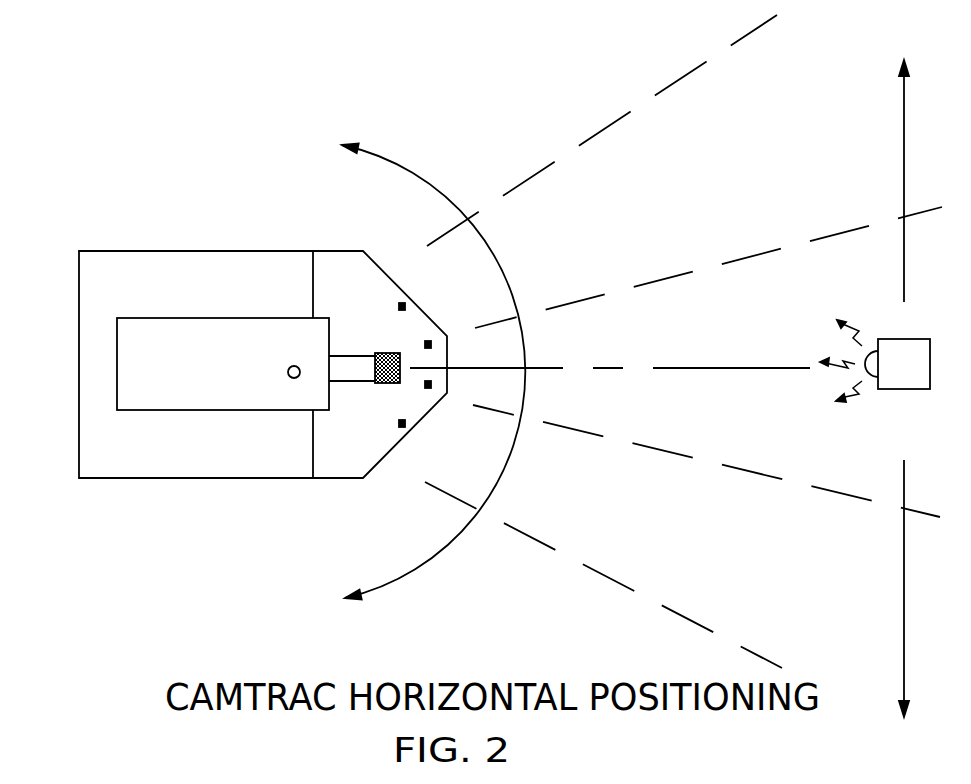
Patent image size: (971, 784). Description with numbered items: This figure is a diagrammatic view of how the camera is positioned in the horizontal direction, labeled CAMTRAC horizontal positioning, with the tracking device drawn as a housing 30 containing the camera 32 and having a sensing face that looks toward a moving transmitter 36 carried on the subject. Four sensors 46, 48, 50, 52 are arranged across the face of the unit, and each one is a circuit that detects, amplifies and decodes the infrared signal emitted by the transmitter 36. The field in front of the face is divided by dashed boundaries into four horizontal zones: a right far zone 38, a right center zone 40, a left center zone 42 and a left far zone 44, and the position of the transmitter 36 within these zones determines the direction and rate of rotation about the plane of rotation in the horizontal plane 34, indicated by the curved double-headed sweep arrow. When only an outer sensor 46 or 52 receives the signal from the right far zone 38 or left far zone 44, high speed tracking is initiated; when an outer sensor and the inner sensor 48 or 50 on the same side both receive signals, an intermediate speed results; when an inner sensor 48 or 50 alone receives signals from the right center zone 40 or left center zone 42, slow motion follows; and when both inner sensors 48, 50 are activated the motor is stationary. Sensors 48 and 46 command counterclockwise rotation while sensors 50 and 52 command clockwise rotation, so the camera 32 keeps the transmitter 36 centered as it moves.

The CAMTRAC tracking unit housing 30 is at (204, 251).
The camera 32 is at (258, 364).
The plane of rotation in the horizontal plane 34 is at (298, 367).
The moving transmitter 36 is at (932, 355).
The right far zone 38 is at (617, 130).
The right center zone 40 is at (708, 271).
The left center zone 42 is at (706, 460).
The left far zone 44 is at (603, 575).
The sensor 46 is at (405, 306).
The sensor 48 is at (431, 344).
The sensor 50 is at (431, 384).
The sensor 52 is at (405, 424).